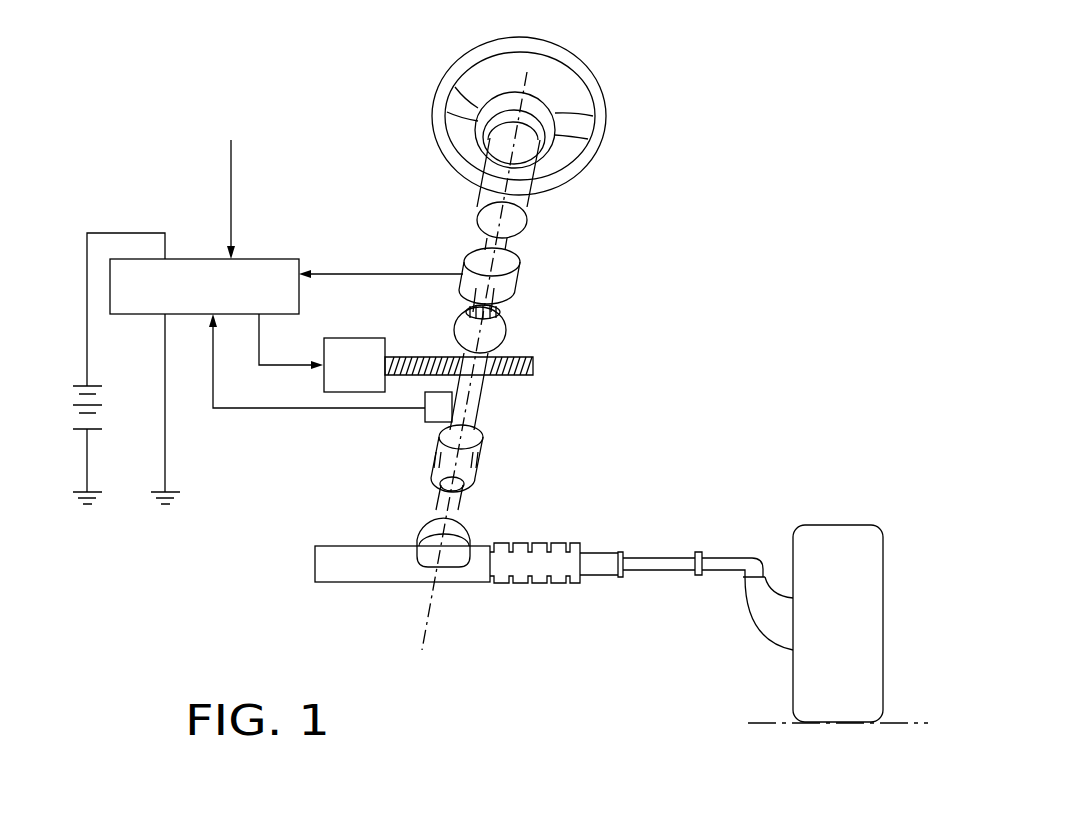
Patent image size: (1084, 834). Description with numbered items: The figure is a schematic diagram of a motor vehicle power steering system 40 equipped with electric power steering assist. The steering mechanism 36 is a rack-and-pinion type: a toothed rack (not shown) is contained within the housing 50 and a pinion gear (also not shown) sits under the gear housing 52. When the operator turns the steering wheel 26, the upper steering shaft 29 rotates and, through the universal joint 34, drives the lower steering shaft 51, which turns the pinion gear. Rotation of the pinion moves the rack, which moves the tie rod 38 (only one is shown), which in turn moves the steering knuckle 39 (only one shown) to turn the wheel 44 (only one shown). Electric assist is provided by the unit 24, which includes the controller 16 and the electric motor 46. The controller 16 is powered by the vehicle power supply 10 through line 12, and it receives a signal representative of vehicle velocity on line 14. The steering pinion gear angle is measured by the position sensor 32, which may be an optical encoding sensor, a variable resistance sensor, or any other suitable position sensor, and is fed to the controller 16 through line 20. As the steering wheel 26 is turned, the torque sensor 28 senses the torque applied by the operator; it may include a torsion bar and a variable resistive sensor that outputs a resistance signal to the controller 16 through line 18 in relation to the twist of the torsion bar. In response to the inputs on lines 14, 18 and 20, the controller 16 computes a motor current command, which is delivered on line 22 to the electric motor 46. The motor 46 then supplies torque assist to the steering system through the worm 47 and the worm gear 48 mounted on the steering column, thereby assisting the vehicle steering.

The vehicle power supply 10 is at (87, 386).
The line 12 is at (107, 233).
The line 14 is at (231, 183).
The controller 16 is at (198, 267).
The line 18 is at (360, 270).
The line 20 is at (227, 408).
The line 22 is at (273, 365).
The electric power steering assist unit 24 is at (686, 243).
The steering wheel 26 is at (573, 67).
The torque sensor 28 is at (472, 262).
The steering shaft 29 is at (505, 220).
The position sensor 32 is at (427, 420).
The universal joint 34 is at (482, 455).
The steering mechanism 36 is at (539, 597).
The tie rod 38 is at (655, 565).
The steering knuckle 39 is at (775, 625).
The motor vehicle power steering system 40 is at (762, 378).
The wheel 44 is at (828, 712).
The electric motor 46 is at (345, 345).
The worm 47 is at (520, 365).
The worm gear 48 is at (500, 333).
The housing 50 is at (365, 575).
The lower steering shaft 51 is at (470, 507).
The gear housing 52 is at (420, 528).